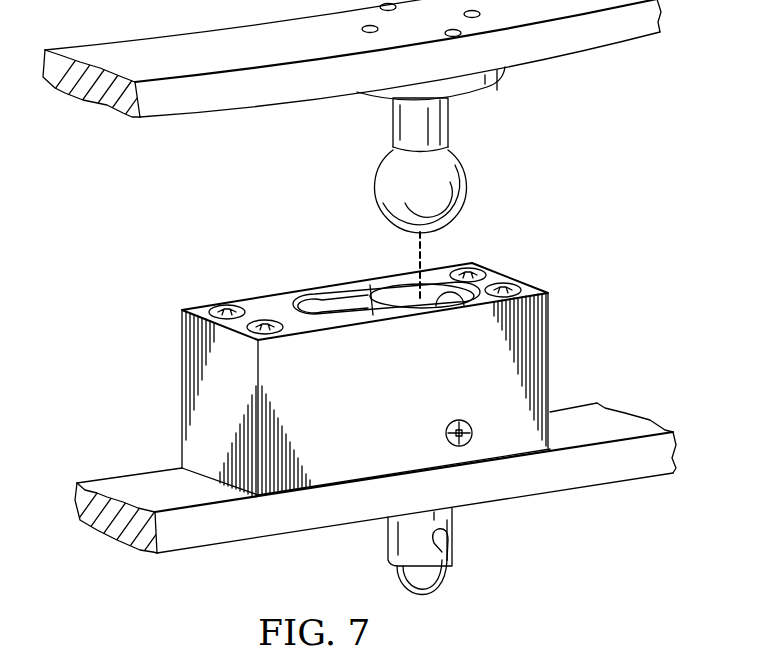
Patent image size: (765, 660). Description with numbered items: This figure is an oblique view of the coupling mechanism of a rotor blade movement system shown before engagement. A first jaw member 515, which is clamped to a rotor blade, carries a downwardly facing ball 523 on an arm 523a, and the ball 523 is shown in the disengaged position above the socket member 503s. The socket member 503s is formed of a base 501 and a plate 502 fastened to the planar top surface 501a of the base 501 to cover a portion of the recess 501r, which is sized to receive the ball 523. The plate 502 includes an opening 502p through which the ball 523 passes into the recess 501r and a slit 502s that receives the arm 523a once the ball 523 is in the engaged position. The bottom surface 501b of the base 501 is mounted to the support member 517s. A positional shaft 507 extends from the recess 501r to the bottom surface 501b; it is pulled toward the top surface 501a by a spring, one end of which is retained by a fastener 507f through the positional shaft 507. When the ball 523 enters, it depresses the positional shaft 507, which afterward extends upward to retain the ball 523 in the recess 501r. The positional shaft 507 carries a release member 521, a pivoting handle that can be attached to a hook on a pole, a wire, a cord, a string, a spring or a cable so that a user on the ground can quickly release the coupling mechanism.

The first jaw member 515 is at (575, 38).
The arm 523a is at (448, 124).
The ball 523 is at (468, 183).
The base 501 is at (552, 362).
The top surface 501a is at (493, 278).
The recess 501r is at (397, 300).
The plate 502 is at (255, 308).
The slit 502s is at (320, 300).
The opening 502p is at (435, 300).
The socket member 503s is at (563, 298).
The fastener 507f is at (446, 427).
The support member 517s is at (570, 477).
The bottom surface 501b is at (362, 486).
The positional shaft 507 is at (455, 522).
The release member 521 is at (445, 582).